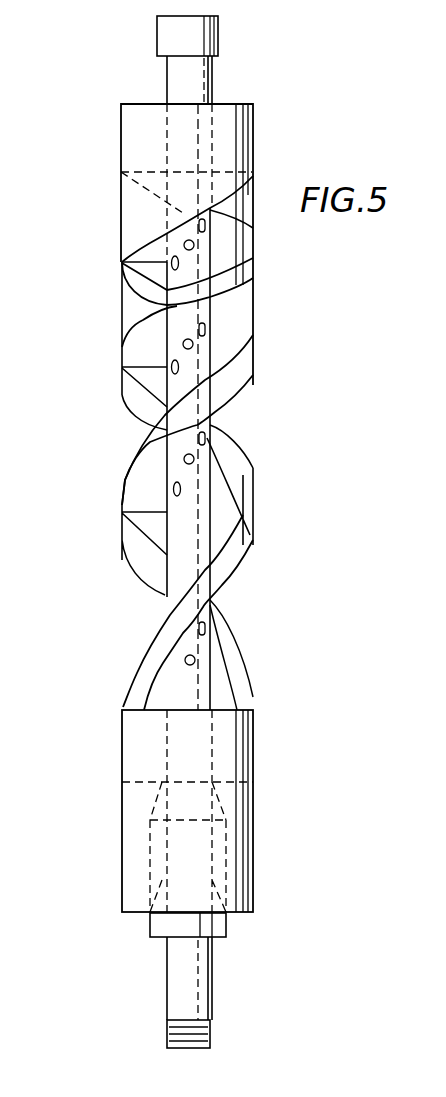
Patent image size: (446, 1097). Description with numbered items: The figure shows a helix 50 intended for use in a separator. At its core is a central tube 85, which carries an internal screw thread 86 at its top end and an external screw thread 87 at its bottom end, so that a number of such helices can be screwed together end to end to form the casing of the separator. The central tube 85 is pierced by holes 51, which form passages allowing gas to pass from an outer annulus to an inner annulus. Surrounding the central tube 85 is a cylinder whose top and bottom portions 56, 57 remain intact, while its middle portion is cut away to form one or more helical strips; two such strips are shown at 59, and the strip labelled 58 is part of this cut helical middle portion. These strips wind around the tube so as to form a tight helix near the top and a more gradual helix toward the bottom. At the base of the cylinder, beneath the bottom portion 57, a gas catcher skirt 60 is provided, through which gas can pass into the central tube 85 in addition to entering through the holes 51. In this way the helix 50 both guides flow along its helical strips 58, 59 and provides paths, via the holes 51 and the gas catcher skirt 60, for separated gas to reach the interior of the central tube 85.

The helix 50 is at (110, 211).
The holes 51 is at (194, 246).
The top portion of cylinder 56 is at (125, 134).
The bottom portion of cylinder 57 is at (126, 830).
The helical flight 58 is at (143, 320).
The helical strips 59 is at (228, 394).
The gas catcher skirt 60 is at (152, 926).
The central tube 85 is at (190, 78).
The internal screw thread 86 is at (162, 37).
The external screw thread 87 is at (210, 1038).